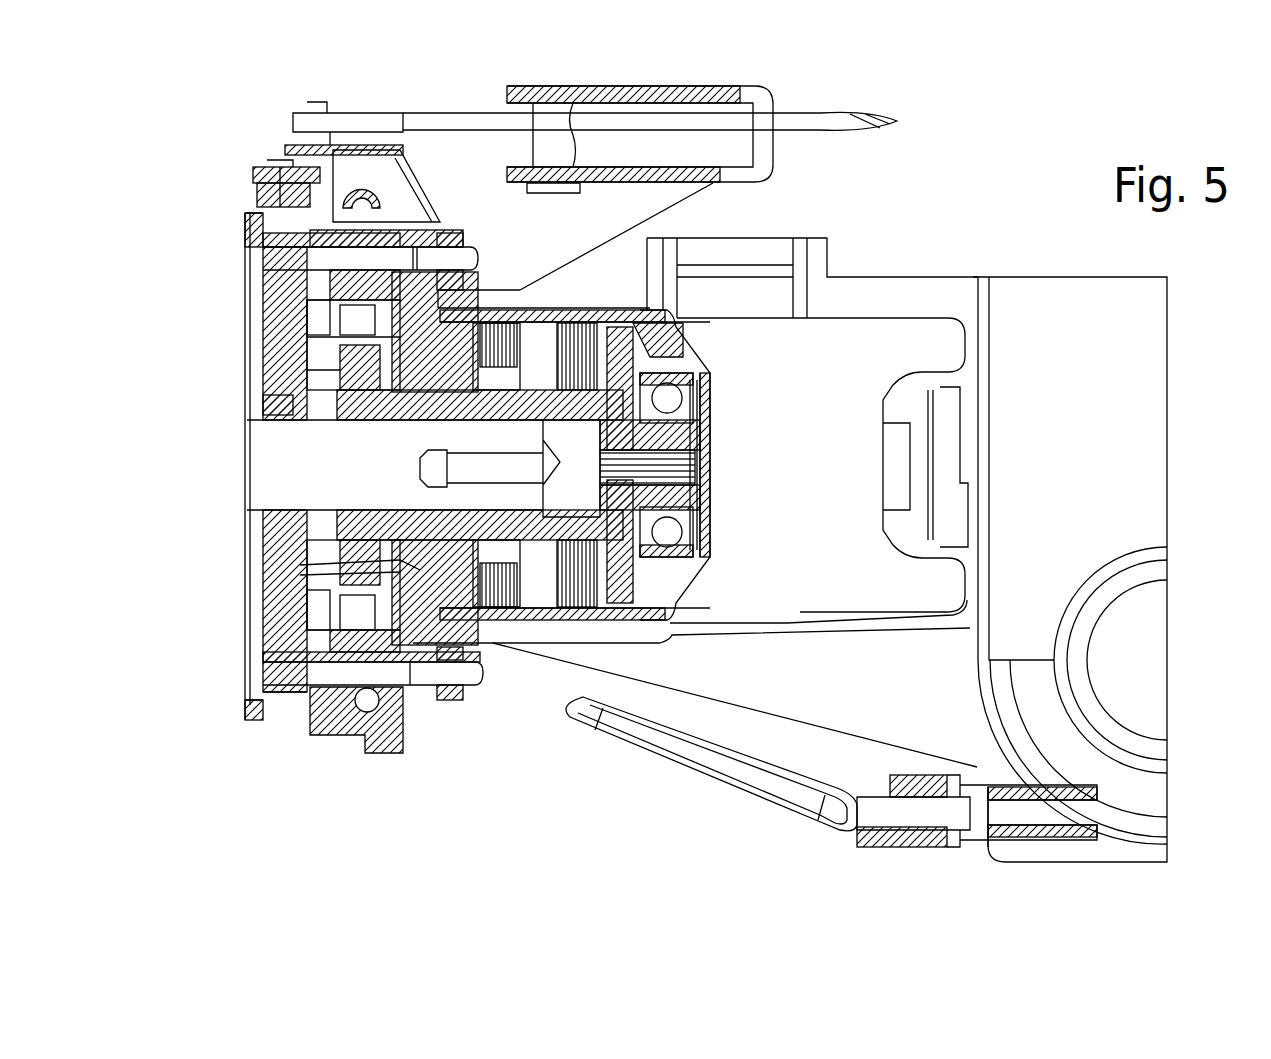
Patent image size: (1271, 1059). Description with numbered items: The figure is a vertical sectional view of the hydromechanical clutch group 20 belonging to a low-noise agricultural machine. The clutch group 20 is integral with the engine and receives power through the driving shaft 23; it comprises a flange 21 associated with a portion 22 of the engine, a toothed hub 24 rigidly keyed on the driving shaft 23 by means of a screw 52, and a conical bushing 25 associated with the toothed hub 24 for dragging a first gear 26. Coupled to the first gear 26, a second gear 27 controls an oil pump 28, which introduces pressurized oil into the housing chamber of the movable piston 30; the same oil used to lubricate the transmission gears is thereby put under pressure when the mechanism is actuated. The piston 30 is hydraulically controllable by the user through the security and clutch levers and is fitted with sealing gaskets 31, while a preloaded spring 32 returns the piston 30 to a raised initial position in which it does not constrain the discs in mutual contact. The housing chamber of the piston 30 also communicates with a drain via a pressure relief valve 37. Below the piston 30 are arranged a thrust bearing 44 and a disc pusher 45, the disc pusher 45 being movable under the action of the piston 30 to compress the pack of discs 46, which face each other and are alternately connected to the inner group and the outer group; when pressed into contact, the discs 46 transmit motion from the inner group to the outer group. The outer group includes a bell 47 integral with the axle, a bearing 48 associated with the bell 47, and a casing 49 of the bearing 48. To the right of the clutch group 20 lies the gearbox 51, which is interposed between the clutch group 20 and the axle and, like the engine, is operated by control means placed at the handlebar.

The hydromechanical clutch group 20 is at (228, 163).
The flange 21 is at (397, 752).
The portion of the engine 22 is at (253, 712).
The driving shaft 23 is at (258, 490).
The toothed hub 24 is at (533, 560).
The conical bushing 25 is at (300, 562).
The first gear 26 is at (268, 407).
The second gear 27 is at (300, 627).
The oil pump 28 is at (345, 613).
The movable piston 30 is at (437, 600).
The sealing gaskets 31 is at (463, 583).
The preloaded spring 32 is at (540, 318).
The pressure relief valve 37 is at (300, 352).
The thrust bearing 44 is at (560, 580).
The disc pusher 45 is at (660, 341).
The pack of discs 46 is at (703, 380).
The bell 47 is at (677, 442).
The bearing 48 is at (705, 565).
The casing 49 is at (700, 535).
The gearbox 51 is at (883, 300).
The screw 52 is at (497, 470).